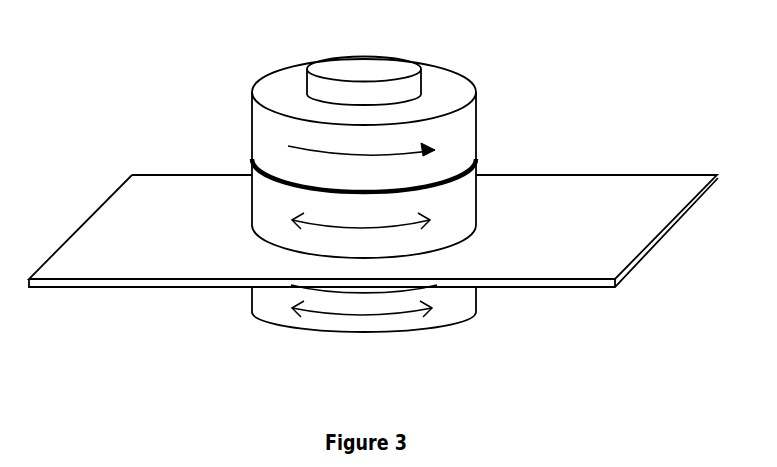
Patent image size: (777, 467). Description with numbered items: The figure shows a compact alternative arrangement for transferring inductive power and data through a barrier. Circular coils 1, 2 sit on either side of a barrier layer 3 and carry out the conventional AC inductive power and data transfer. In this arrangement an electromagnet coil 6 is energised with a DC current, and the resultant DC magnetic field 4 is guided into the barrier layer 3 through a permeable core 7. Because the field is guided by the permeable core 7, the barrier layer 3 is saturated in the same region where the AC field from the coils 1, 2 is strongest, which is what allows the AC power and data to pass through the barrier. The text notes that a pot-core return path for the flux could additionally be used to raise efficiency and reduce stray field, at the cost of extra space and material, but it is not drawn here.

The circular coil 1 is at (477, 192).
The circular coil 2 is at (363, 332).
The barrier layer 3 is at (615, 285).
The DC magnetic field 4 is at (361, 144).
The electromagnet coil 6 is at (477, 120).
The permeable core 7 is at (307, 75).